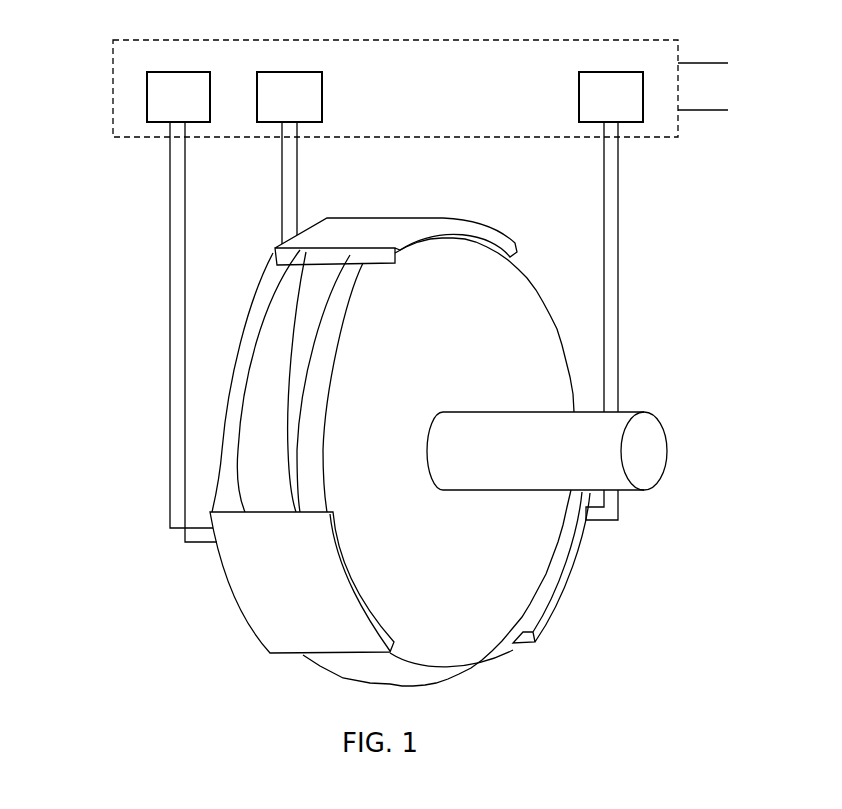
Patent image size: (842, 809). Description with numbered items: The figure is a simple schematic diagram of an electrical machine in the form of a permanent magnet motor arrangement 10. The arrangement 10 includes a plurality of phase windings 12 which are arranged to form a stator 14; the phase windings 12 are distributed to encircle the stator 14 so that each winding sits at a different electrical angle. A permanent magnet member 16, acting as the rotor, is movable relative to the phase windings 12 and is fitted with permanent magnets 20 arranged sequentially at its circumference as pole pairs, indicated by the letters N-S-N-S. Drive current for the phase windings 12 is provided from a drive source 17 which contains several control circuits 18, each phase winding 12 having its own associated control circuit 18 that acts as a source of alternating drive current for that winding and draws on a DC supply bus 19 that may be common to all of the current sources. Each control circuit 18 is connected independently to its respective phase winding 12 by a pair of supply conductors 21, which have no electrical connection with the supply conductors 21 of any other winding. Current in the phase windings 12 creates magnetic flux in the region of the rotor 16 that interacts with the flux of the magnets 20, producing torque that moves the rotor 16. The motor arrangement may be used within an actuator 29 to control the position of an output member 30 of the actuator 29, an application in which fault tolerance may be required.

The permanent magnet motor arrangement 10 is at (112, 423).
The phase winding 12 is at (428, 217).
The stator 14 is at (277, 327).
The permanent magnet member 16 is at (485, 630).
The drive source 17 is at (113, 101).
The control circuit 18 is at (165, 109).
The DC supply bus 19 is at (697, 102).
The permanent magnets 20 is at (333, 492).
The supply conductors 21 is at (185, 277).
The actuator 29 is at (675, 683).
The output member 30 is at (657, 453).